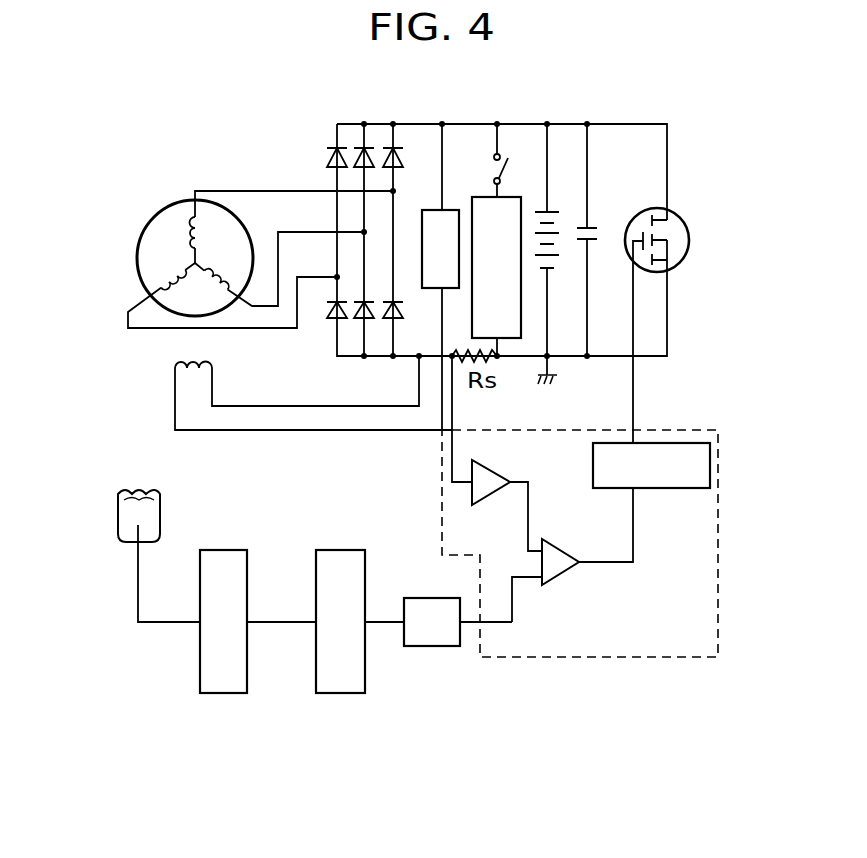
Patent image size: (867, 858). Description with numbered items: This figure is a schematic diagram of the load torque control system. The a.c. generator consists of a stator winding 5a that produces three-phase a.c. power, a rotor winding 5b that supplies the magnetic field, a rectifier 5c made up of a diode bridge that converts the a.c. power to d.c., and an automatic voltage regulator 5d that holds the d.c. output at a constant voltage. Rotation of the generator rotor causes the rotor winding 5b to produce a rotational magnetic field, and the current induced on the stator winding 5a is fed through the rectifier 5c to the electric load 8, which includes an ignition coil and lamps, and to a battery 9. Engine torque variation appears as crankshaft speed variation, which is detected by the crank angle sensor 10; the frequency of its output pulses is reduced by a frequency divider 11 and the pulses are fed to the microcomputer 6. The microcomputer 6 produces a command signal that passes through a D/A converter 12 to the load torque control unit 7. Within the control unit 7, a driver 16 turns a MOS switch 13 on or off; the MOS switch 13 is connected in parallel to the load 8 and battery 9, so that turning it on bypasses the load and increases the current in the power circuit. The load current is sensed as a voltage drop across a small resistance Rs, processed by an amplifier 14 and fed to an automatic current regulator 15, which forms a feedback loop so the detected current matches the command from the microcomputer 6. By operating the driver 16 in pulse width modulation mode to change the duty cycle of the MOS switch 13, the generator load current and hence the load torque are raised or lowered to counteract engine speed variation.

The stator winding 5a is at (157, 213).
The rotor winding 5b is at (175, 365).
The rectifier 5c is at (327, 323).
The automatic voltage regulator 5d is at (422, 215).
The microcomputer 6 is at (357, 550).
The load torque control unit 7 is at (517, 657).
The electric load 8 is at (487, 186).
The battery 9 is at (548, 143).
The crank angle sensor 10 is at (162, 517).
The frequency divider 11 is at (243, 550).
The D/A converter 12 is at (413, 598).
The MOS switch 13 is at (678, 215).
The amplifier 14 is at (495, 467).
The automatic current regulator 15 is at (565, 553).
The driver 16 is at (658, 488).